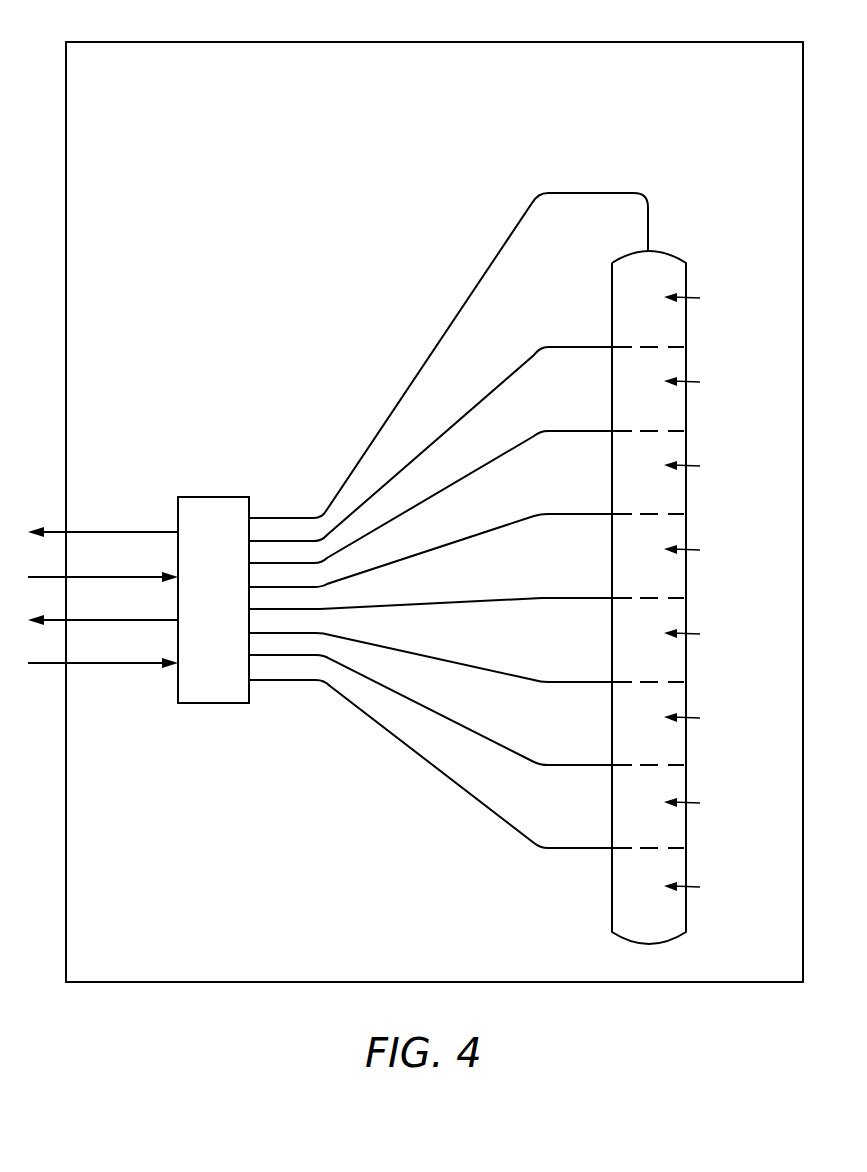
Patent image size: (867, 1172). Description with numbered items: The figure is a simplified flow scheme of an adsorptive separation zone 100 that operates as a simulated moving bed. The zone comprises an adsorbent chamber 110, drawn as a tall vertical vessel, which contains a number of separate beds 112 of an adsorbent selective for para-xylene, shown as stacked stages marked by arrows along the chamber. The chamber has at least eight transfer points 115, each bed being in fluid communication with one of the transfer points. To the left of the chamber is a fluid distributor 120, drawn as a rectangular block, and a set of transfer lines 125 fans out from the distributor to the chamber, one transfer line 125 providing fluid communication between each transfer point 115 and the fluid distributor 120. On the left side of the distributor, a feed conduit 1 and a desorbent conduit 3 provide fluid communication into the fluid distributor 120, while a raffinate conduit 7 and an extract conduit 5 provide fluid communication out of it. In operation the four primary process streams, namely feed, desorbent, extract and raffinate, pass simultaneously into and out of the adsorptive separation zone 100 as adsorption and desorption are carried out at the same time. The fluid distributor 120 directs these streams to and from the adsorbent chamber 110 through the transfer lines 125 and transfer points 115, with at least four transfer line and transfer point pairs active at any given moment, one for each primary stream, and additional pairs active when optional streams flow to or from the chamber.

The adsorptive separation zone 100 is at (708, 42).
The adsorbent chamber 110 is at (668, 254).
The beds 112 is at (706, 593).
The transfer points 115 is at (647, 250).
The fluid distributor 120 is at (196, 497).
The transfer line 125 is at (489, 270).
The feed conduit 1 is at (102, 576).
The desorbent conduit 3 is at (102, 662).
The extract conduit 5 is at (155, 620).
The raffinate conduit 7 is at (155, 532).